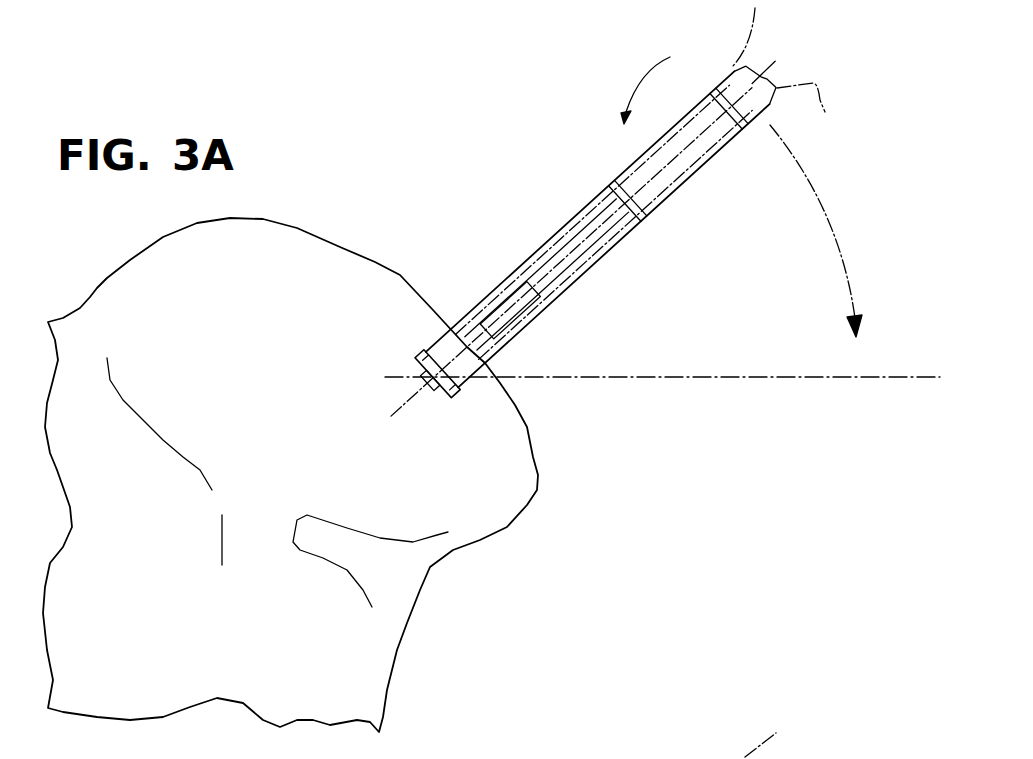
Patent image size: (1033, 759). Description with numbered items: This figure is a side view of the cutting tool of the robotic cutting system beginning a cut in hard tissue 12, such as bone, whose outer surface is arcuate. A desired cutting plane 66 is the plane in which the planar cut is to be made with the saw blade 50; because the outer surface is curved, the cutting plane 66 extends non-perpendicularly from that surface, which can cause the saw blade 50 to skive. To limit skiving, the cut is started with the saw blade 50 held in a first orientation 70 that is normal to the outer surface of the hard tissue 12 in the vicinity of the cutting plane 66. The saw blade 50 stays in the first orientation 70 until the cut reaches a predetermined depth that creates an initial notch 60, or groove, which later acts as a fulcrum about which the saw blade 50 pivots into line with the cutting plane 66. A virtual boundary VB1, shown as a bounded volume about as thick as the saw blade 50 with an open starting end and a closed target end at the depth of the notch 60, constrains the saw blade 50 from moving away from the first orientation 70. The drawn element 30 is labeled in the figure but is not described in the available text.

The hard tissue 12 is at (137, 316).
The cannula / outer tube 30 is at (550, 240).
The saw blade 50 is at (482, 318).
The initial notch 60 is at (440, 387).
The desired cutting plane 66 is at (412, 372).
The first orientation 70 is at (661, 83).
The virtual boundary VB1 is at (827, 113).